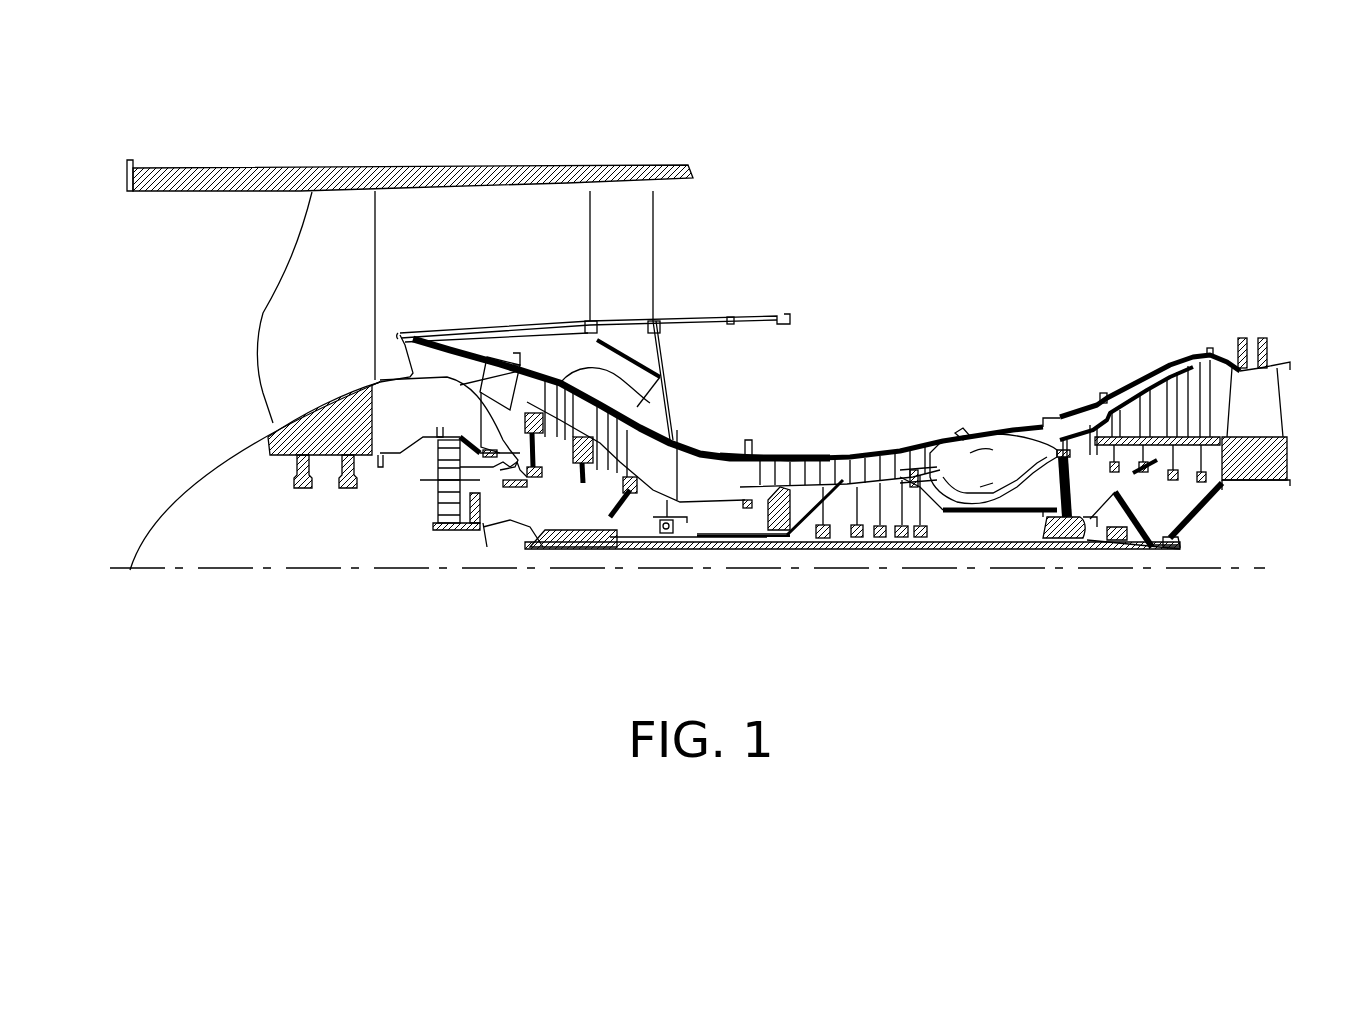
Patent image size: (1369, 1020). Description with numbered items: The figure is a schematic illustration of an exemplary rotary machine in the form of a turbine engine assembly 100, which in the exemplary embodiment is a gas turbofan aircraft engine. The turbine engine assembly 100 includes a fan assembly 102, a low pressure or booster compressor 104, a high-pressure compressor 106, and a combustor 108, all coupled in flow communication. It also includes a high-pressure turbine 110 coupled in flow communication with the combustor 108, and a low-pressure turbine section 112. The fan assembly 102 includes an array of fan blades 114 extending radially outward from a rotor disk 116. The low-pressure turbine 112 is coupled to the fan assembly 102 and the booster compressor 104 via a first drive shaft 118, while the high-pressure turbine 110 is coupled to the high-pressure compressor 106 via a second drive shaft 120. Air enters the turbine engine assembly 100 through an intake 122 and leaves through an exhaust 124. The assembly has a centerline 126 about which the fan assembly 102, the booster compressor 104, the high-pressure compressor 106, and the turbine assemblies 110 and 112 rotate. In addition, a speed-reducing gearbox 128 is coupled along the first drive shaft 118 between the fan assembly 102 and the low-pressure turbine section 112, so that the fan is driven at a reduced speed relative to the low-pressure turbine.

The turbine engine assembly 100 is at (1042, 305).
The fan assembly 102 is at (243, 421).
The booster compressor 104 is at (652, 402).
The high-pressure compressor 106 is at (830, 455).
The combustor 108 is at (993, 457).
The high-pressure turbine 110 is at (1062, 425).
The low-pressure turbine section 112 is at (1180, 367).
The fan blades 114 is at (358, 316).
The rotor disk 116 is at (277, 455).
The first drive shaft 118 is at (868, 552).
The second drive shaft 120 is at (1008, 512).
The intake 122 is at (118, 228).
The exhaust 124 is at (1303, 375).
The centerline 126 is at (318, 573).
The speed-reducing gearbox 128 is at (423, 492).